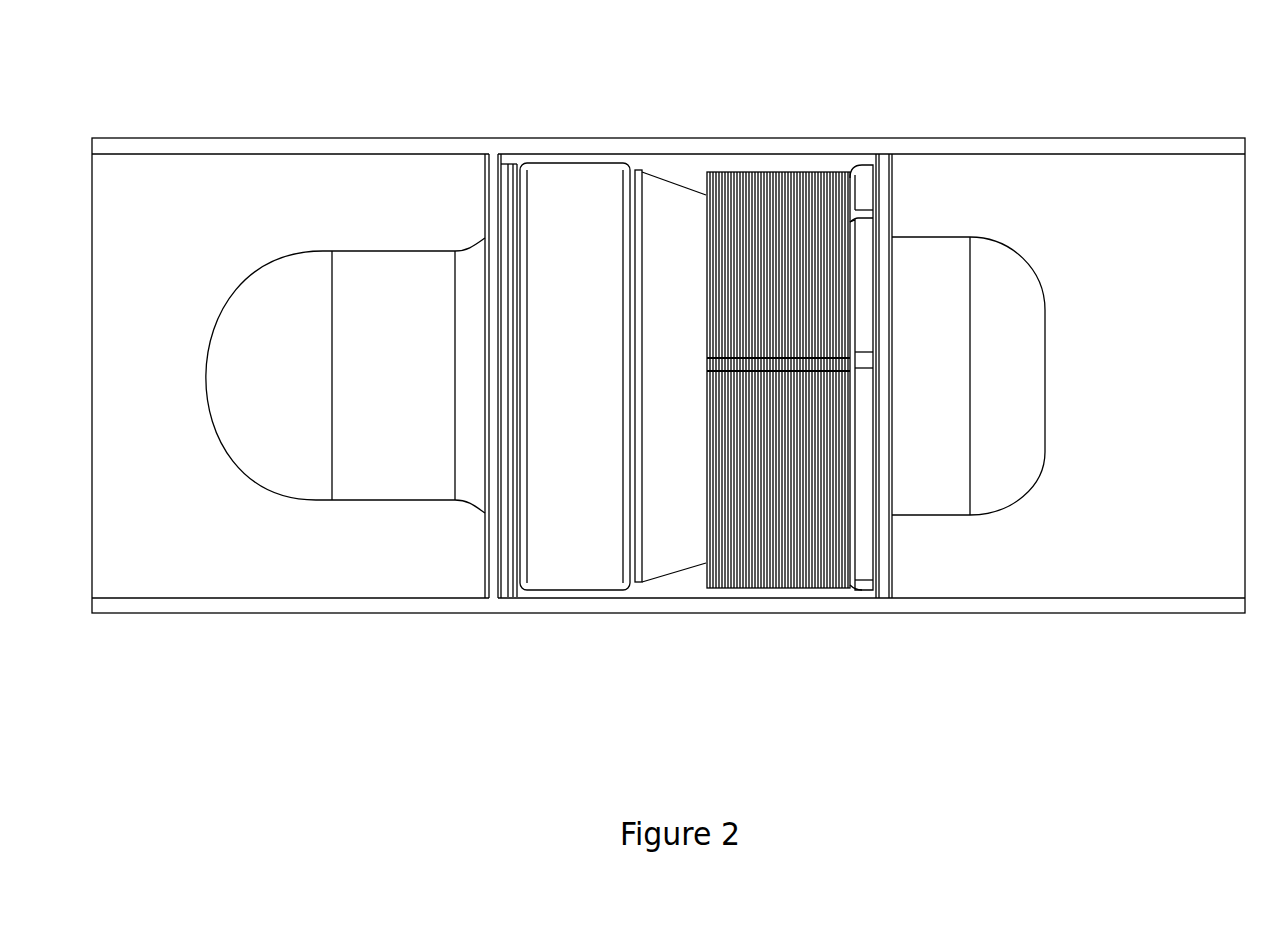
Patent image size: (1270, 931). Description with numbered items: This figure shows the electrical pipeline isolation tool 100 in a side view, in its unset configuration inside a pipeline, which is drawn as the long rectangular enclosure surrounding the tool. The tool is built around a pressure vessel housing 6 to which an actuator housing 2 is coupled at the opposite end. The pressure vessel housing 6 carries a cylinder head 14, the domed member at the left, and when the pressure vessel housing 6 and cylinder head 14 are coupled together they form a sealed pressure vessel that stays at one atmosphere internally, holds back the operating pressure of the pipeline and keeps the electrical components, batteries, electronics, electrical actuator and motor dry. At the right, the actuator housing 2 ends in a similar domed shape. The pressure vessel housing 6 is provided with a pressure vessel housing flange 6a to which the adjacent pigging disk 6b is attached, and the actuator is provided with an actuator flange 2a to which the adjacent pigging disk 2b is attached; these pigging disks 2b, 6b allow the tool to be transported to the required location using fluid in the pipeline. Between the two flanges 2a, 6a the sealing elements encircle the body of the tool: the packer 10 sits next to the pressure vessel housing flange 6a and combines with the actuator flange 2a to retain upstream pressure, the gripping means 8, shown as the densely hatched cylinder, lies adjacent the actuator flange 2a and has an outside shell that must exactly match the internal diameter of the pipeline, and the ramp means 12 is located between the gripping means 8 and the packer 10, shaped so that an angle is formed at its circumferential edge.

The electrical pipeline isolation tool 100 is at (668, 308).
The pressure vessel housing 6 is at (290, 481).
The cylinder head 14 is at (319, 502).
The pigging disk 6b is at (484, 588).
The pressure vessel housing flange 6a is at (512, 597).
The packer 10 is at (580, 590).
The ramp means 12 is at (675, 573).
The gripping means 8 is at (772, 590).
The actuator flange 2a is at (868, 590).
The pigging disk 2b is at (887, 593).
The actuator housing 2 is at (985, 515).